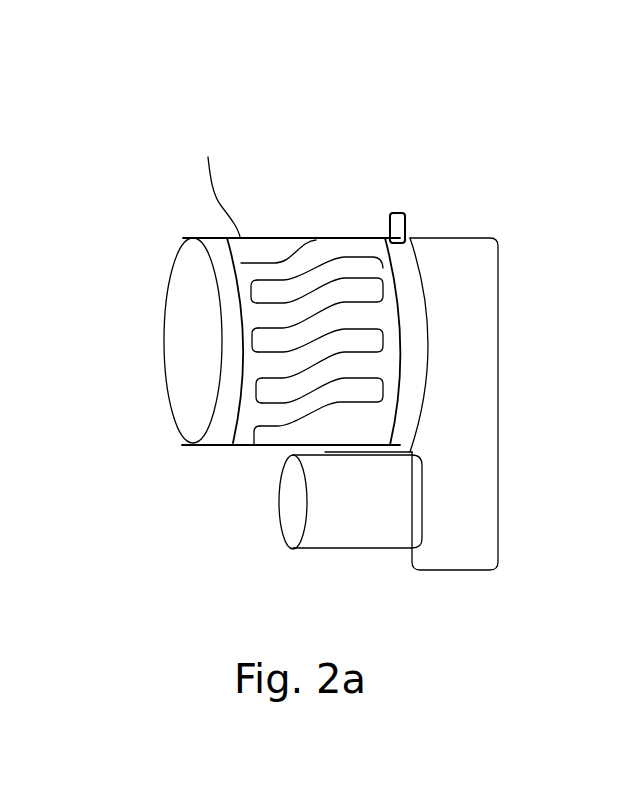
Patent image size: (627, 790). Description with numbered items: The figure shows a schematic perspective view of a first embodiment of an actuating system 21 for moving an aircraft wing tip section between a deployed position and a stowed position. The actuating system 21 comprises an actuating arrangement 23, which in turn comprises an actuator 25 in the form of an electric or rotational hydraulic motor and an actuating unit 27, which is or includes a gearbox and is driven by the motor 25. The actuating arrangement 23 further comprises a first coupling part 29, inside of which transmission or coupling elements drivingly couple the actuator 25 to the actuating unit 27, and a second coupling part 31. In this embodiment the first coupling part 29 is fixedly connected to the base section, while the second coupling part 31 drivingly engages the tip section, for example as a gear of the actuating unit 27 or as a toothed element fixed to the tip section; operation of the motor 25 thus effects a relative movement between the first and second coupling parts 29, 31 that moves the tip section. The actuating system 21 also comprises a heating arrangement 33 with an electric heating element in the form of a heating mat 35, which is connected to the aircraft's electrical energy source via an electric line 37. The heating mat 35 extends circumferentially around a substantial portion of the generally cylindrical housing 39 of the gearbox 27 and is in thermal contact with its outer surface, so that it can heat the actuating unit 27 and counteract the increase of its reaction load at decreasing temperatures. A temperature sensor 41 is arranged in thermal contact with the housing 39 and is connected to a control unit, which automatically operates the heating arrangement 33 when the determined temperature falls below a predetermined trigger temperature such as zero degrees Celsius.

The actuating system 21 is at (460, 140).
The actuating arrangement 23 is at (176, 475).
The actuator 25 is at (348, 526).
The actuating unit 27 is at (418, 298).
The first coupling part 29 is at (466, 438).
The second coupling part 31 is at (150, 384).
The heating arrangement 33 is at (284, 220).
The heating mat 35 is at (345, 236).
The electric line 37 is at (210, 183).
The housing 39 is at (194, 236).
The temperature sensor 41 is at (405, 219).